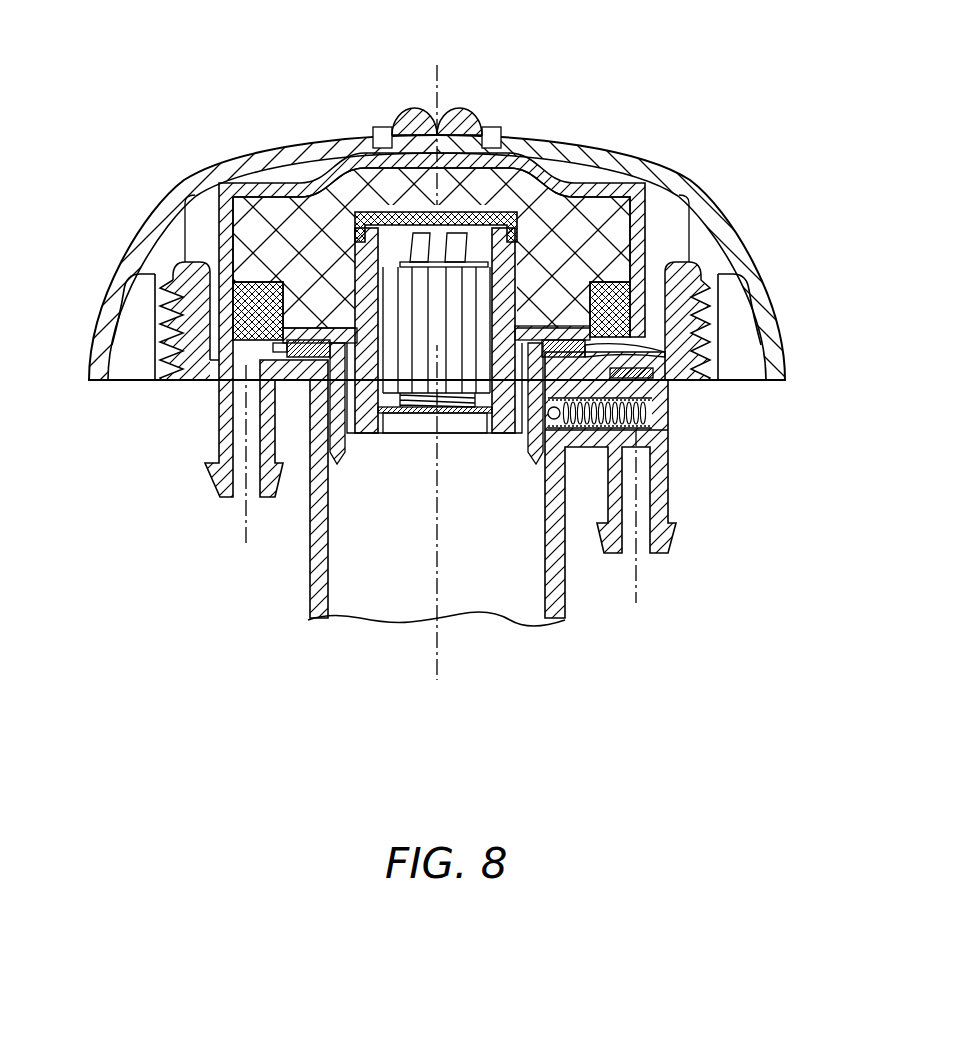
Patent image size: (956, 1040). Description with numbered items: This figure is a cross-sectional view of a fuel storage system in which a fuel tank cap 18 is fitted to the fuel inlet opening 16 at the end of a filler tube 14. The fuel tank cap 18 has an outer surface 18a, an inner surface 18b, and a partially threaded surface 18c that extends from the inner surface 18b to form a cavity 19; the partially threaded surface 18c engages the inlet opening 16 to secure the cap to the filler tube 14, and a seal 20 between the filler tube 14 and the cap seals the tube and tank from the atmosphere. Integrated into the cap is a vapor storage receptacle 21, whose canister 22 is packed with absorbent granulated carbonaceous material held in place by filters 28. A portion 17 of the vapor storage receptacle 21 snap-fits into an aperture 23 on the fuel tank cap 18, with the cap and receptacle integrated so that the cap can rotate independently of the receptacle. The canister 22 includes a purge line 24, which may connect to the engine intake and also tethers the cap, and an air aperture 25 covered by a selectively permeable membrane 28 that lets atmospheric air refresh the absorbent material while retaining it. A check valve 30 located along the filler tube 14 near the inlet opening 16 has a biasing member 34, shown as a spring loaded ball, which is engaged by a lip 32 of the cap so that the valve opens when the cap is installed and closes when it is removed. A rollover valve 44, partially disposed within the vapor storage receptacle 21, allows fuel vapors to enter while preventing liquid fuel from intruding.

The filler tube 14 is at (310, 593).
The fuel inlet opening 16 is at (692, 252).
The portion of vapor storage receptacle 17 is at (406, 106).
The fuel tank cap 18 is at (800, 310).
The outer surface 18a is at (143, 223).
The inner surface 18b is at (130, 322).
The partially threaded surface 18c is at (157, 352).
The cavity 19 is at (203, 205).
The seal 20 is at (277, 350).
The vapor storage receptacle 21 is at (580, 252).
The canister 22 is at (623, 183).
The aperture 23 is at (449, 104).
The purge line 24 is at (214, 446).
The air aperture 25 is at (624, 343).
The filter / selectively permeable membrane 28 is at (268, 280).
The check valve 30 is at (626, 436).
The lip 32 is at (527, 452).
The biasing member 34 is at (652, 425).
The rollover valve 44 is at (407, 452).